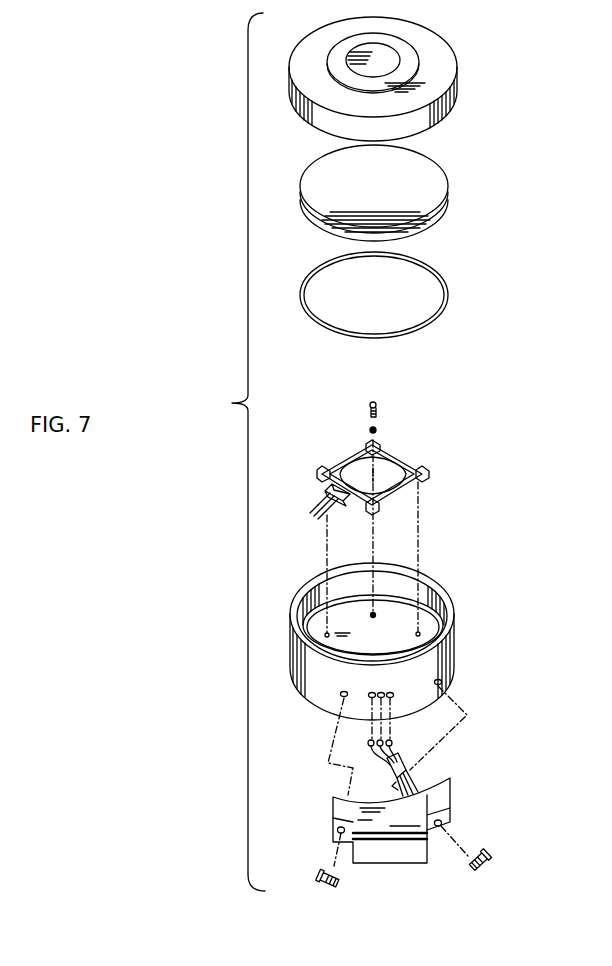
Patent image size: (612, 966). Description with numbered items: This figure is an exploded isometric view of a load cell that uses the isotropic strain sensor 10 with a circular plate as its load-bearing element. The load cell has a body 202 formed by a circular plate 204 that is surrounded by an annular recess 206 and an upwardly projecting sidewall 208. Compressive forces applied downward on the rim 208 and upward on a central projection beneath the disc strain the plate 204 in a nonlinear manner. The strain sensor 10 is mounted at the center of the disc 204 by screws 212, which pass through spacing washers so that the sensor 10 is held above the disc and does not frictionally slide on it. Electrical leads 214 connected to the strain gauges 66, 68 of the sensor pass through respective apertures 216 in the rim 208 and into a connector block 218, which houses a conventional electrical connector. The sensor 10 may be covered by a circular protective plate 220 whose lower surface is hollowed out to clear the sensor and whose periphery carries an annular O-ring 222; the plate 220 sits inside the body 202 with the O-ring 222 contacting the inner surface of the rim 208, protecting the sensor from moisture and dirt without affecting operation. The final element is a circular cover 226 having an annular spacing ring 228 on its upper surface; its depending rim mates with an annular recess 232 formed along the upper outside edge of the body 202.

The strain sensor 10 is at (441, 448).
The strain gauge 66 is at (341, 499).
The strain gauge 68 is at (365, 480).
The body 202 is at (457, 653).
The circular plate 204 is at (397, 645).
The annular recess 206 is at (422, 614).
The sidewall 208 is at (447, 665).
The screws 212 is at (378, 408).
The electrical leads 214 is at (305, 516).
The apertures 216 is at (393, 703).
The connector block 218 is at (397, 855).
The circular protective plate 220 is at (430, 178).
The O-ring 222 is at (445, 286).
The circular cover 226 is at (441, 79).
The annular spacing ring 228 is at (405, 55).
The annular recess 232 is at (440, 622).